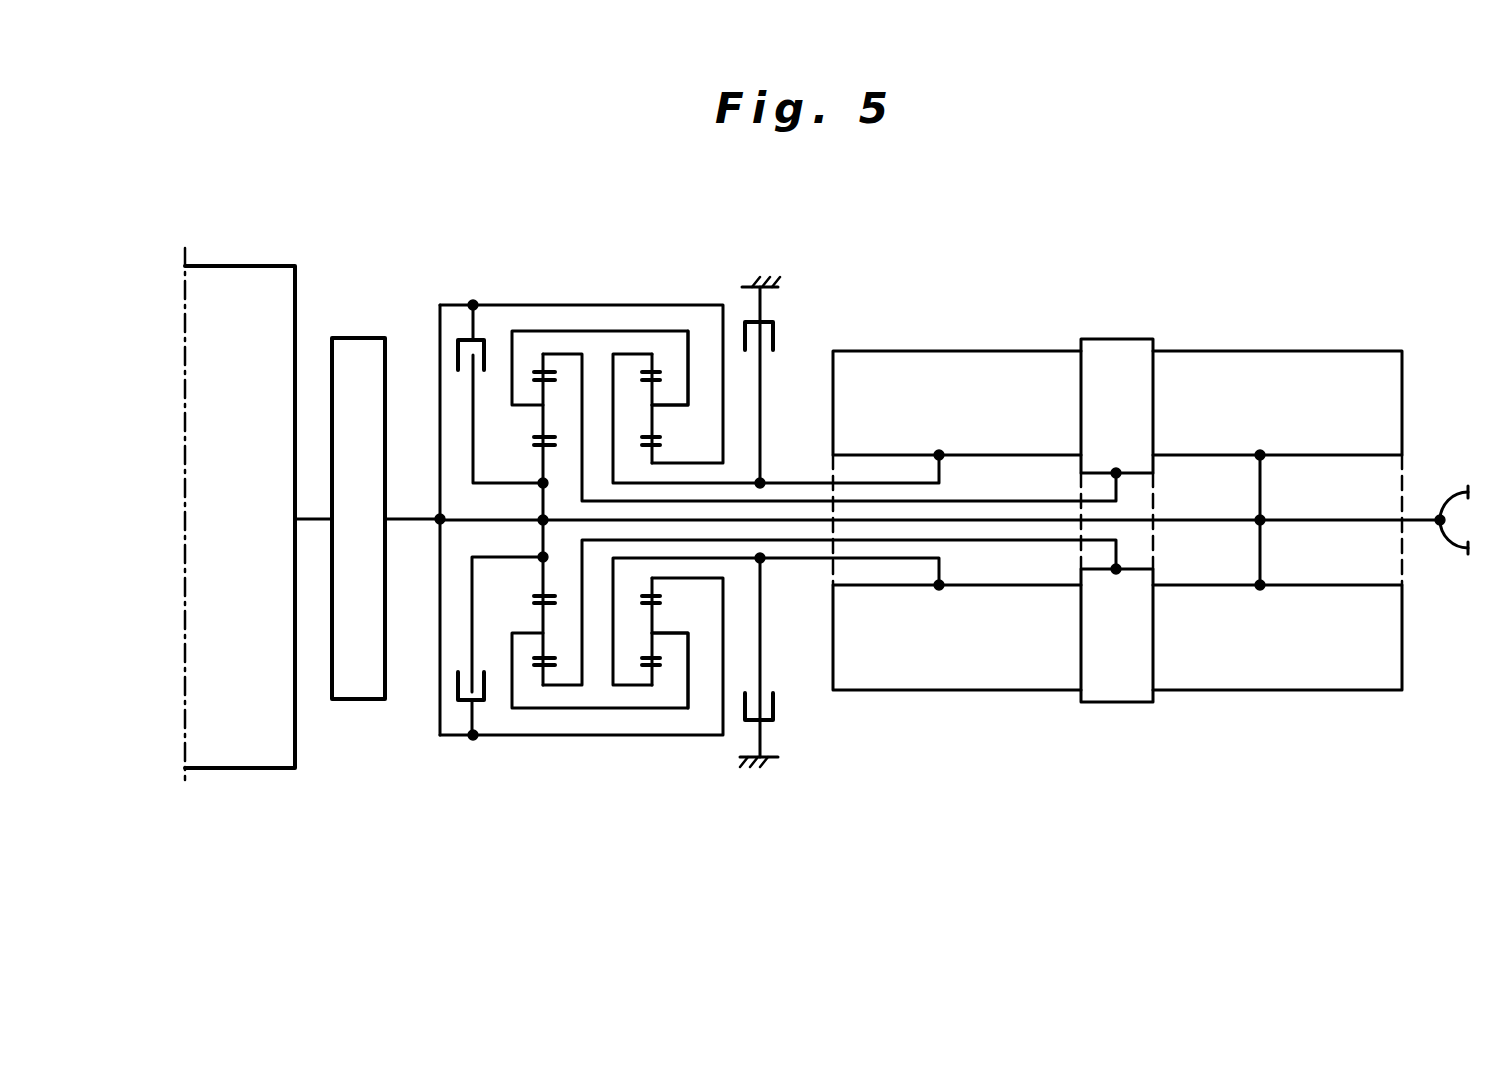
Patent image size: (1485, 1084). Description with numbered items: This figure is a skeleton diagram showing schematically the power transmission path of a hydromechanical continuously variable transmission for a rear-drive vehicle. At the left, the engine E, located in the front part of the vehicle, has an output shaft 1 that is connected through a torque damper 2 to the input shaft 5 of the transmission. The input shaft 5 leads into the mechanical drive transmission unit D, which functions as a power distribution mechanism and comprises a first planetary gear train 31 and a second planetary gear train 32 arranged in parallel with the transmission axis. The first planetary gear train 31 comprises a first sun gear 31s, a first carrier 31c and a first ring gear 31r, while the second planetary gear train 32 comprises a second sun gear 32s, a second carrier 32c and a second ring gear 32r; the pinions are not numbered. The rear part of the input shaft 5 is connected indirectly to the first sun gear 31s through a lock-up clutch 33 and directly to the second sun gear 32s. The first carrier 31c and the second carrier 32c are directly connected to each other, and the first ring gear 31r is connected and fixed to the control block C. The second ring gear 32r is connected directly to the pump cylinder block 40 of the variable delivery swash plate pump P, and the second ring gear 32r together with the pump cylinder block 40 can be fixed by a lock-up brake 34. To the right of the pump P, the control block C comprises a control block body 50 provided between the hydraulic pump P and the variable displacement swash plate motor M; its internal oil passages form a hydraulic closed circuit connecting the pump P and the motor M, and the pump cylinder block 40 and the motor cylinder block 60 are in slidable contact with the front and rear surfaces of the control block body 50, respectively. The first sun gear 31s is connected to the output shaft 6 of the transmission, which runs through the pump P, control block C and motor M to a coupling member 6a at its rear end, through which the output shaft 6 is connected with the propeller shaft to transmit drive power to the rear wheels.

The engine E is at (290, 266).
The torque damper 2 is at (350, 338).
The output shaft of the engine 1 is at (314, 521).
The input shaft of the transmission 5 is at (408, 521).
The mechanical drive transmission unit D is at (581, 470).
The lock-up clutch 33 is at (458, 346).
The first planetary gear train 31 is at (795, 543).
The first sun gear 31s is at (543, 573).
The first carrier 31c is at (522, 692).
The first ring gear 31r is at (576, 690).
The second planetary gear train 32 is at (769, 543).
The second sun gear 32s is at (650, 582).
The second carrier 32c is at (674, 692).
The second ring gear 32r is at (634, 692).
The lock-up brake 34 is at (773, 339).
The variable delivery swash plate pump P is at (957, 477).
The pump cylinder block 40 is at (985, 420).
The control block C is at (1117, 483).
The control block body 50 is at (1140, 420).
The variable displacement swash plate motor M is at (1277, 477).
The motor cylinder block 60 is at (1290, 420).
The output shaft of the transmission 6 is at (1422, 520).
The coupling member 6a is at (1456, 555).